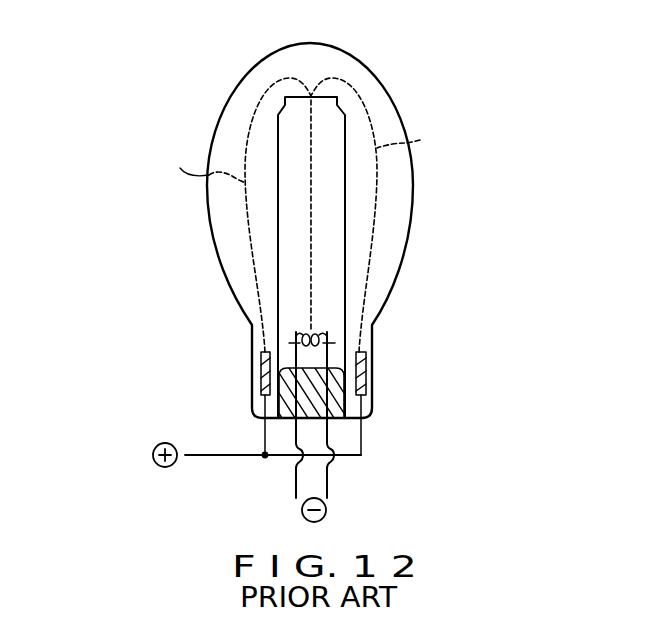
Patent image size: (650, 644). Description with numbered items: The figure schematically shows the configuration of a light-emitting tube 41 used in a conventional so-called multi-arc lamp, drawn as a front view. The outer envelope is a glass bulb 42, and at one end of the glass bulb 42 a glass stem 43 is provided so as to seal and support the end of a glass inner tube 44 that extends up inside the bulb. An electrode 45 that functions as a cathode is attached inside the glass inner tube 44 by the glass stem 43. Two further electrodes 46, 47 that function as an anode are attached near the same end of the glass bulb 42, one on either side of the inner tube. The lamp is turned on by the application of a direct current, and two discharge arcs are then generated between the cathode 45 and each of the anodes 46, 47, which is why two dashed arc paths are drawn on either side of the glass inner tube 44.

The light-emitting tube 41 is at (225, 88).
The glass bulb 42 is at (360, 60).
The glass stem 43 is at (340, 407).
The glass inner tube 44 is at (346, 235).
The electrode 45 is at (320, 330).
The electrode 46 is at (261, 370).
The electrode 47 is at (366, 372).